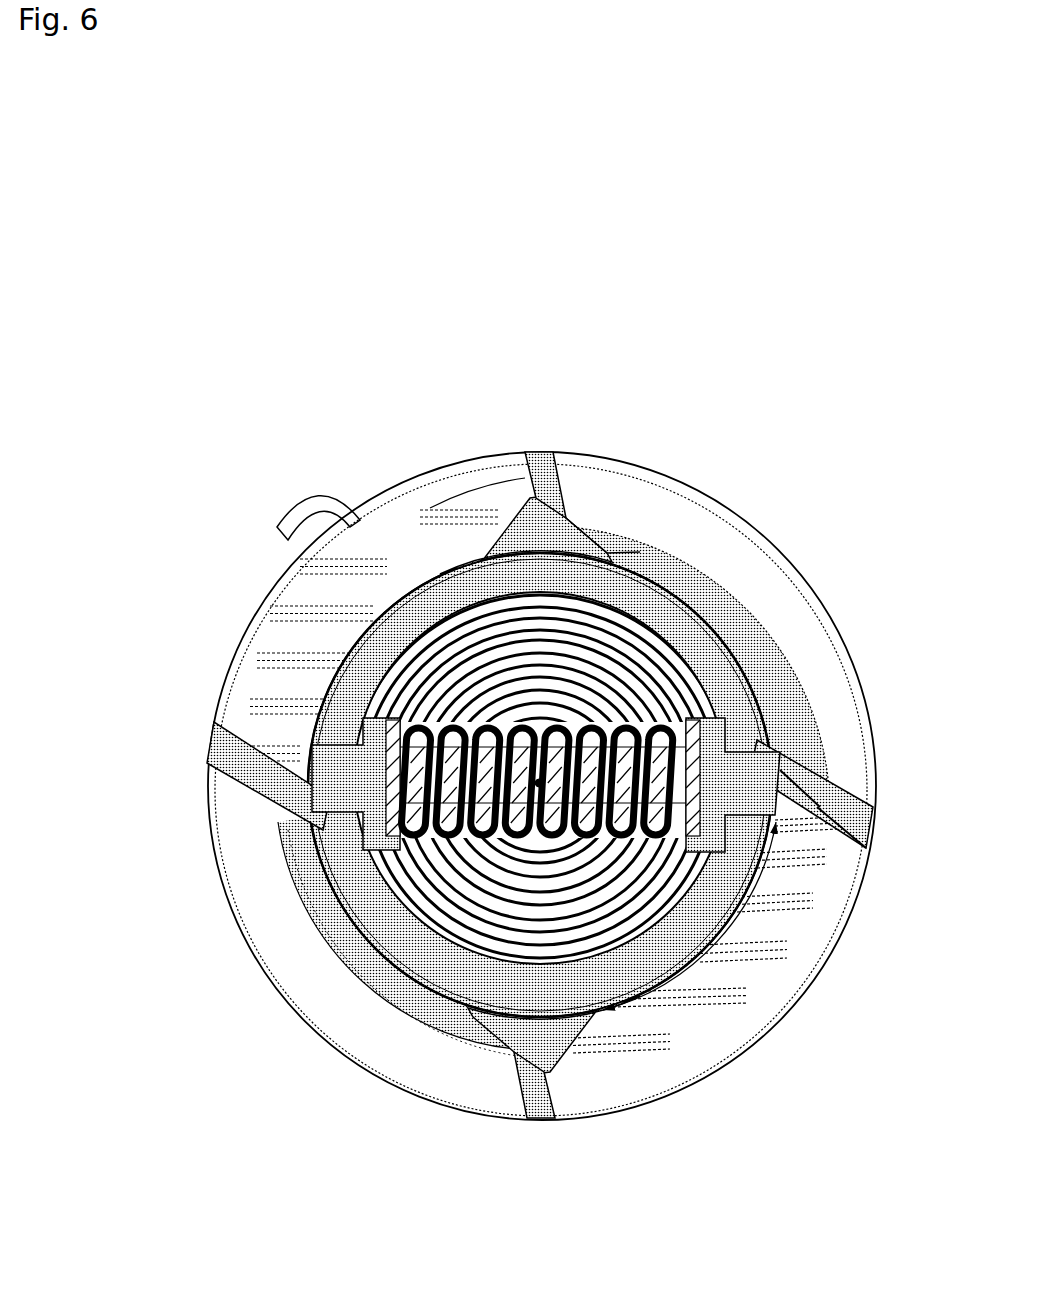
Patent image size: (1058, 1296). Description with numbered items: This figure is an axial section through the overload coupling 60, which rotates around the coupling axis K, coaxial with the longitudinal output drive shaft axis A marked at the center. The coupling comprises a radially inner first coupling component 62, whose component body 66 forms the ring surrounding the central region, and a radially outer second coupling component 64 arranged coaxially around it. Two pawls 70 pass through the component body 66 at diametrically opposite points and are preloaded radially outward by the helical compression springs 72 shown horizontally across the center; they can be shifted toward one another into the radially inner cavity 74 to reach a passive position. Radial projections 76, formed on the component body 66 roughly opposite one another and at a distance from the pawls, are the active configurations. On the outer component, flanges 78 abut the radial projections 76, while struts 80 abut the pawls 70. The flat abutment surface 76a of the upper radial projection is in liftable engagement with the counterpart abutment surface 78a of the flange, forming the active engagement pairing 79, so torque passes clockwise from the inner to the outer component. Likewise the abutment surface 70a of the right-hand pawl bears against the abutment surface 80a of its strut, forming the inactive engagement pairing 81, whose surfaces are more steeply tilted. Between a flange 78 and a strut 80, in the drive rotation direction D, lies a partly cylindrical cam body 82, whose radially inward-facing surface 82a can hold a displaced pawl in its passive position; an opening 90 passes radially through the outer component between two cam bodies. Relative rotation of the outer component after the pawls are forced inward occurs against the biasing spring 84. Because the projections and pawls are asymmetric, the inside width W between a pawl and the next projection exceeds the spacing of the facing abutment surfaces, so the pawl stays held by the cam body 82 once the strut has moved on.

The overload coupling 60 is at (195, 195).
The first coupling component 62 is at (458, 548).
The second coupling component 64 is at (752, 478).
The component body 66 is at (540, 785).
The pawl 70 is at (546, 785).
The abutment surface of pawl 70a is at (793, 772).
The helical compression spring 72 is at (604, 840).
The radially inner cavity 74 is at (540, 786).
The radial projection 76 is at (540, 785).
The abutment surface of radial projection 76a is at (537, 509).
The flange 78 is at (566, 500).
The counterpart abutment surface of flange 78a is at (525, 478).
The active engagement pairing 79 is at (540, 447).
The strut 80 is at (832, 787).
The abutment surface of strut 80a is at (842, 830).
The inactive engagement pairing 81 is at (862, 778).
The cam body 82 is at (737, 627).
The radially inward-facing surface of cam body 82a is at (708, 612).
The biasing spring 84 is at (292, 513).
The opening 90 is at (536, 781).
The longitudinal output drive shaft axis A is at (540, 780).
The coupling axis K is at (539, 783).
The rotational drive direction D is at (180, 662).
The inside width W is at (727, 933).